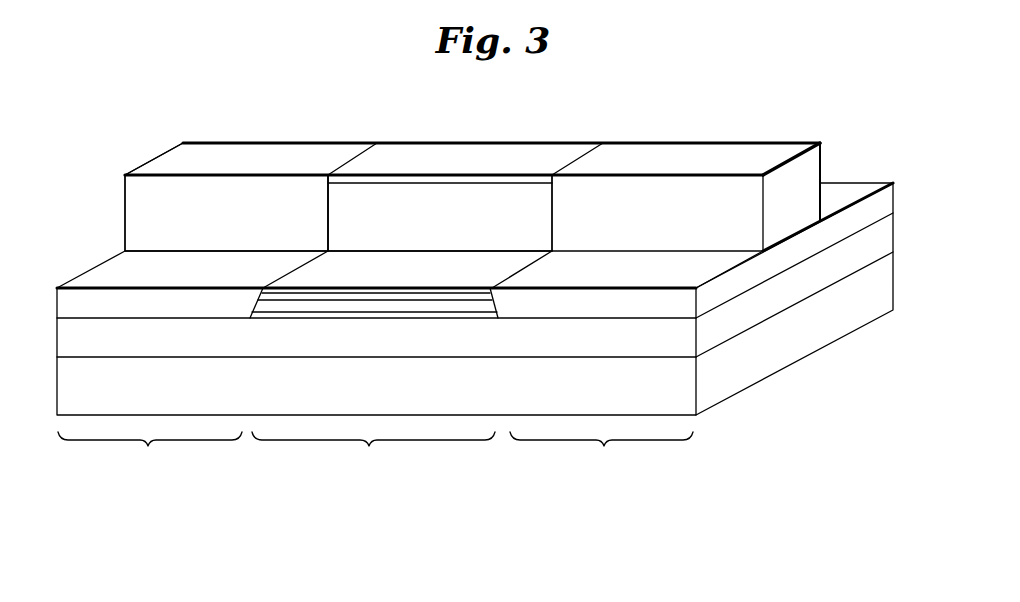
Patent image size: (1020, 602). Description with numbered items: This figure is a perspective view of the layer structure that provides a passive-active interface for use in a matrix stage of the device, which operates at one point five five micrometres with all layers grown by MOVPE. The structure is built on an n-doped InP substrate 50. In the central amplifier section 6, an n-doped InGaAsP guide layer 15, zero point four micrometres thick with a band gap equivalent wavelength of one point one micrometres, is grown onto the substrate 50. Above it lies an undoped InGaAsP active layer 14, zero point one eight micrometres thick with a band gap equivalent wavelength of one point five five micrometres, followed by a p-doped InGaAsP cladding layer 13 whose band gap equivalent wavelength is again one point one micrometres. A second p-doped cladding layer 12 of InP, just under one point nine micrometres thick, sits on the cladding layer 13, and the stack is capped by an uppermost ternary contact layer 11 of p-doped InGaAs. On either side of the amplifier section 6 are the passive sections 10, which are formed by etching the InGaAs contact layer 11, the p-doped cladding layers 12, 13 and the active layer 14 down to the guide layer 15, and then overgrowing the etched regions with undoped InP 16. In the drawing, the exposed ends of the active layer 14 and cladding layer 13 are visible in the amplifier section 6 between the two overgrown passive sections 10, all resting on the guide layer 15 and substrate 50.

The amplifier section 6 is at (401, 367).
The passive sections 10 is at (149, 145).
The contact layer 11 is at (430, 160).
The second cladding layer 12 is at (382, 200).
The cladding layer 13 is at (262, 293).
The active layer 14 is at (266, 302).
The guide layer 15 is at (305, 333).
The undoped InP 16 is at (140, 209).
The substrate 50 is at (795, 335).